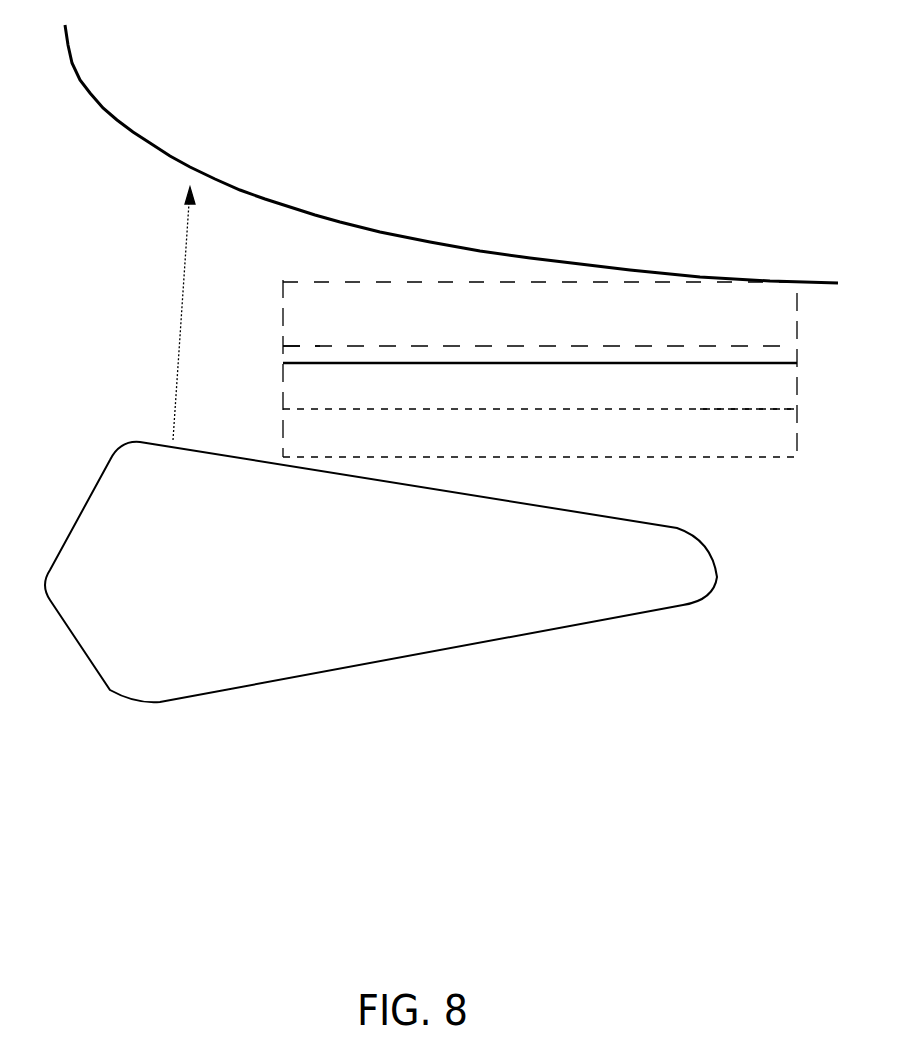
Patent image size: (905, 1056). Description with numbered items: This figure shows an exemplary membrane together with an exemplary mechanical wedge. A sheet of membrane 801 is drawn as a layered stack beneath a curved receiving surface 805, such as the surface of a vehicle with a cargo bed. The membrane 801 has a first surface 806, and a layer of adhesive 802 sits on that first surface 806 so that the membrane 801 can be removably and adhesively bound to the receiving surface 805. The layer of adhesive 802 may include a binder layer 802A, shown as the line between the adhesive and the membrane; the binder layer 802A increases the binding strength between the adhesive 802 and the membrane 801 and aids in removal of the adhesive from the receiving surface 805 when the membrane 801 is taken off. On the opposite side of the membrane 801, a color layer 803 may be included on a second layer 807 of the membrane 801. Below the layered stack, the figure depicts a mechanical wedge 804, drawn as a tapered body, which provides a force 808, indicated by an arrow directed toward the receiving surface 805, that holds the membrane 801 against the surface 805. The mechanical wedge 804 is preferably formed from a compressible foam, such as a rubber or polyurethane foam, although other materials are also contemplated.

The membrane 801 is at (540, 388).
The layer of adhesive 802 is at (540, 369).
The binder layer 802A is at (569, 362).
The color layer 803 is at (540, 441).
The mechanical wedge 804 is at (381, 572).
The receiving surface 805 is at (451, 154).
The first surface 806 is at (302, 342).
The second layer 807 is at (743, 413).
The force 808 is at (171, 313).